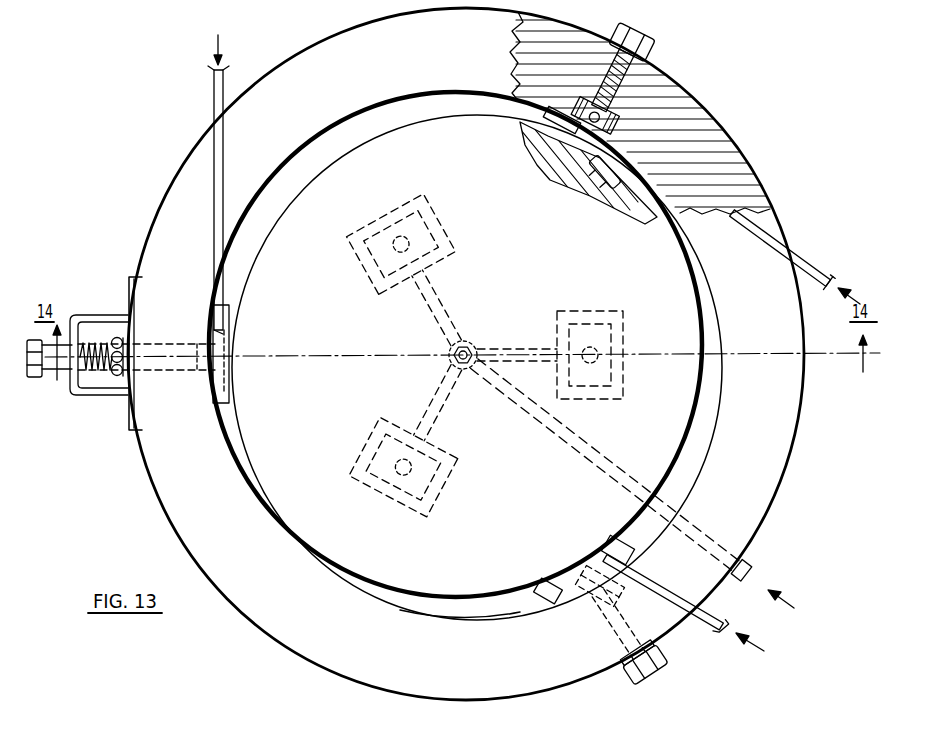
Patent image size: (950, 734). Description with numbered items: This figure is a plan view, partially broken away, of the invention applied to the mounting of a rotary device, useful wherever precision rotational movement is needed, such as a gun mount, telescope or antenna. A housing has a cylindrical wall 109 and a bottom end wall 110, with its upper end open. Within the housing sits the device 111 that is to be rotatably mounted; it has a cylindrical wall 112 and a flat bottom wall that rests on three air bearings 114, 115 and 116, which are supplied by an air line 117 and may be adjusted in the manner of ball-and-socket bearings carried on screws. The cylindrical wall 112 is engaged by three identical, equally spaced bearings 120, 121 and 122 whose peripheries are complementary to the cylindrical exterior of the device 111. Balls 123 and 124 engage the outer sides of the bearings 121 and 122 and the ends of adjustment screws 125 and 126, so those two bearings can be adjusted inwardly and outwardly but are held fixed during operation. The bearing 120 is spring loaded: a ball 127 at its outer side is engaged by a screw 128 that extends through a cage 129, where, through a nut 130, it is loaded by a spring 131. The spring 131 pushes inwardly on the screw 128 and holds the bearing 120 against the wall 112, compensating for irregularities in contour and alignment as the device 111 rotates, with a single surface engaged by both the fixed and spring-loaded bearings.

The cylindrical wall 109 is at (778, 420).
The bottom end wall 110 is at (688, 474).
The device 111 is at (360, 582).
The cylindrical wall 112 is at (460, 598).
The air bearing 114 is at (452, 226).
The air bearing 115 is at (355, 450).
The air bearing 116 is at (626, 368).
The air line 117 is at (743, 570).
The bearing 120 is at (225, 386).
The bearing 121 is at (545, 122).
The bearing 122 is at (623, 548).
The ball 123 is at (563, 135).
The ball 124 is at (606, 592).
The adjustment screw 125 is at (653, 50).
The adjustment screw 126 is at (651, 676).
The ball 127 is at (218, 350).
The screw 128 is at (36, 378).
The cage 129 is at (116, 393).
The nut 130 is at (115, 338).
The spring 131 is at (103, 346).